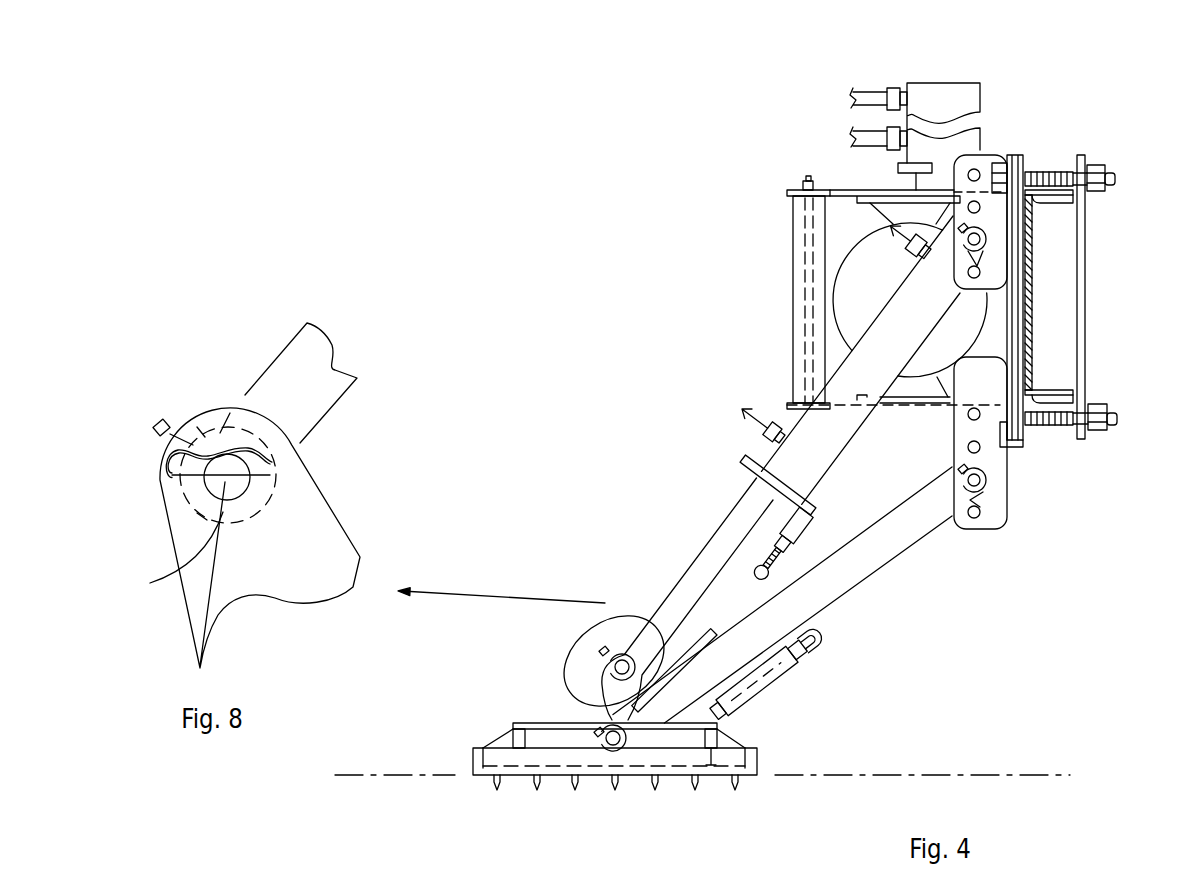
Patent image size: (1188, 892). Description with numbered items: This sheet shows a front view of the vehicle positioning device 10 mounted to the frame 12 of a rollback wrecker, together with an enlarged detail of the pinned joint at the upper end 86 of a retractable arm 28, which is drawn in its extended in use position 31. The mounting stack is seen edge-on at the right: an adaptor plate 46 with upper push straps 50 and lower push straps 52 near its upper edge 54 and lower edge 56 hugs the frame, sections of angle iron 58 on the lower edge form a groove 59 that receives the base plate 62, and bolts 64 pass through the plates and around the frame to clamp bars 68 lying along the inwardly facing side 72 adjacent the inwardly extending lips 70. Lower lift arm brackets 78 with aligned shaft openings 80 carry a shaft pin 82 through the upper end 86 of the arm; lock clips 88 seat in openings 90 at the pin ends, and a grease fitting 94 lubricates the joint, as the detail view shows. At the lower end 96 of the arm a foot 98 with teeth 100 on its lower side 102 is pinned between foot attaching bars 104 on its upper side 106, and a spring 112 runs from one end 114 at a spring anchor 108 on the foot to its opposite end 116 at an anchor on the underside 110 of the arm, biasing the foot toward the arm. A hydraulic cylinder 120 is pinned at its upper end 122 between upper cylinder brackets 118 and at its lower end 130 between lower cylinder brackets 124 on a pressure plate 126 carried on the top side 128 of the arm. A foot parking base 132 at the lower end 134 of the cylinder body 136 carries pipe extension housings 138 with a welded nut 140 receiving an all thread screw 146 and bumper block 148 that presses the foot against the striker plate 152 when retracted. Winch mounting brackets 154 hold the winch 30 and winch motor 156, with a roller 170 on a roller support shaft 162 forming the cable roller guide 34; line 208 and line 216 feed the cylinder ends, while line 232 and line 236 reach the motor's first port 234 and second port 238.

In FIG. 4, the vehicle positioning device 10 is at (615, 258).
In FIG. 4, the frame 12 is at (1084, 352).
In FIG. 4, the retractable arm 28 is at (895, 560).
In FIG. 4, the winch 30 is at (850, 243).
In FIG. 4, the in use position 31 is at (603, 500).
In FIG. 4, the cable roller guide 34 is at (793, 240).
In FIG. 4, the adaptor plate 46 is at (1020, 293).
In FIG. 4, the upper push straps 50 is at (1055, 194).
In FIG. 4, the lower push straps 52 is at (1040, 362).
In FIG. 4, the upper edge 54 is at (1020, 158).
In FIG. 4, the lower edge 56 is at (1020, 448).
In FIG. 4, the angle iron 58 is at (1008, 450).
In FIG. 4, the groove 59 is at (967, 417).
In FIG. 4, the base plate 62 is at (1034, 318).
In FIG. 4, the bolts 64 is at (1055, 170).
In FIG. 4, the clamp bars 68 is at (1088, 396).
In FIG. 4, the inwardly extending lips 70 is at (1070, 212).
In FIG. 4, the inwardly facing side 72 is at (1034, 330).
In FIG. 4, the lower lift arm brackets 78 is at (1005, 527).
In FIG. 4, the shaft openings 80 is at (978, 172).
In FIG. 8, the shaft openings 80 is at (242, 506).
In FIG. 8, the shaft pin 82 is at (150, 583).
In FIG. 4, the upper end 86 is at (960, 470).
In FIG. 8, the lock clips 88 is at (170, 472).
In FIG. 8, the openings 90 is at (205, 490).
In FIG. 4, the grease fittings 94 is at (802, 182).
In FIG. 8, the grease fittings 94 is at (152, 425).
In FIG. 4, the lower end 96 is at (650, 728).
In FIG. 4, the foot 98 is at (473, 760).
In FIG. 4, the teeth 100 is at (736, 786).
In FIG. 4, the lower side 102 is at (600, 735).
In FIG. 4, the foot attaching bars 104 is at (560, 742).
In FIG. 4, the upper side 106 is at (742, 745).
In FIG. 4, the spring anchor 108 is at (818, 646).
In FIG. 4, the underside 110 is at (895, 585).
In FIG. 4, the spring 112 is at (765, 690).
In FIG. 4, the one end 114 is at (722, 720).
In FIG. 4, the opposite end 116 is at (800, 655).
In FIG. 4, the upper cylinder brackets 118 is at (1002, 160).
In FIG. 4, the hydraulic cylinder 120 is at (838, 357).
In FIG. 4, the upper end 122 is at (992, 232).
In FIG. 4, the lower cylinder brackets 124 is at (613, 645).
In FIG. 8, the lower cylinder brackets 124 is at (352, 540).
In FIG. 4, the pressure plate 126 is at (652, 610).
In FIG. 4, the top side 128 is at (772, 590).
In FIG. 4, the lower end 130 is at (610, 668).
In FIG. 8, the lower end 130 is at (200, 518).
In FIG. 4, the foot parking base 132 is at (746, 458).
In FIG. 4, the lower end 134 is at (805, 475).
In FIG. 4, the body 136 is at (880, 340).
In FIG. 4, the pipe extension housings 138 is at (778, 500).
In FIG. 4, the nut 140 is at (782, 520).
In FIG. 4, the all thread screw 146 is at (780, 542).
In FIG. 4, the bumper block 148 is at (770, 560).
In FIG. 4, the striker plate 152 is at (545, 722).
In FIG. 4, the winch mounting brackets 154 is at (795, 192).
In FIG. 4, the winch motor 156 is at (922, 93).
In FIG. 4, the roller support shaft 162 is at (805, 303).
In FIG. 4, the roller 170 is at (795, 275).
In FIG. 4, the line 208 is at (735, 405).
In FIG. 4, the line 216 is at (903, 243).
In FIG. 4, the line 232 is at (868, 142).
In FIG. 4, the first port 234 is at (895, 130).
In FIG. 4, the line 236 is at (868, 93).
In FIG. 4, the second port 238 is at (893, 92).